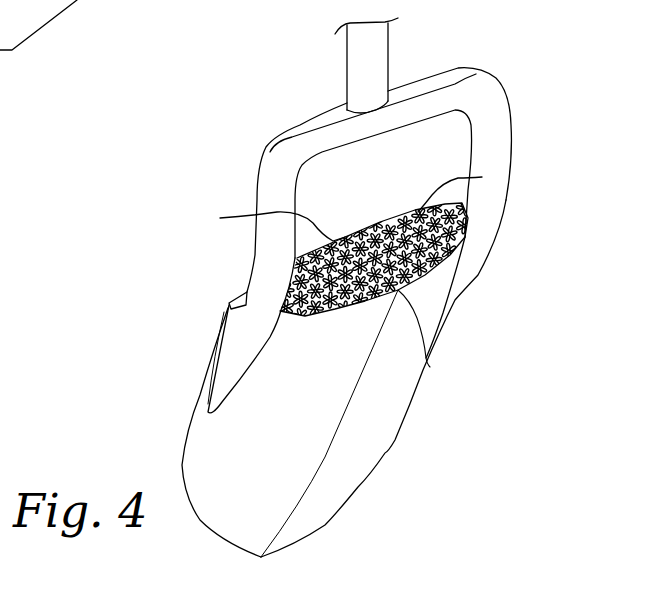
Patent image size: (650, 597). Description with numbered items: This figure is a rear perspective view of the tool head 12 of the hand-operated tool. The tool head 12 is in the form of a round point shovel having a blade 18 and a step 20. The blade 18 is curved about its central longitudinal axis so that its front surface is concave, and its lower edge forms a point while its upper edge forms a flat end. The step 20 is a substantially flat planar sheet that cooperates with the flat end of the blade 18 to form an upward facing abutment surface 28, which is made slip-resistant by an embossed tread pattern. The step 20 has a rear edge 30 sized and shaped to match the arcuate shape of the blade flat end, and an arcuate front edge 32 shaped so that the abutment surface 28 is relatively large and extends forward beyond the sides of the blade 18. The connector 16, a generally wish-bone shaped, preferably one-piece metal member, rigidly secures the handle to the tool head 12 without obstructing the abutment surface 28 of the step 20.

The tool head 12 is at (183, 433).
The connector 16 is at (512, 153).
The blade 18 is at (385, 453).
The step 20 is at (401, 218).
The abutment surface 28 is at (220, 218).
The rear edge 30 is at (428, 362).
The front edge 32 is at (482, 177).